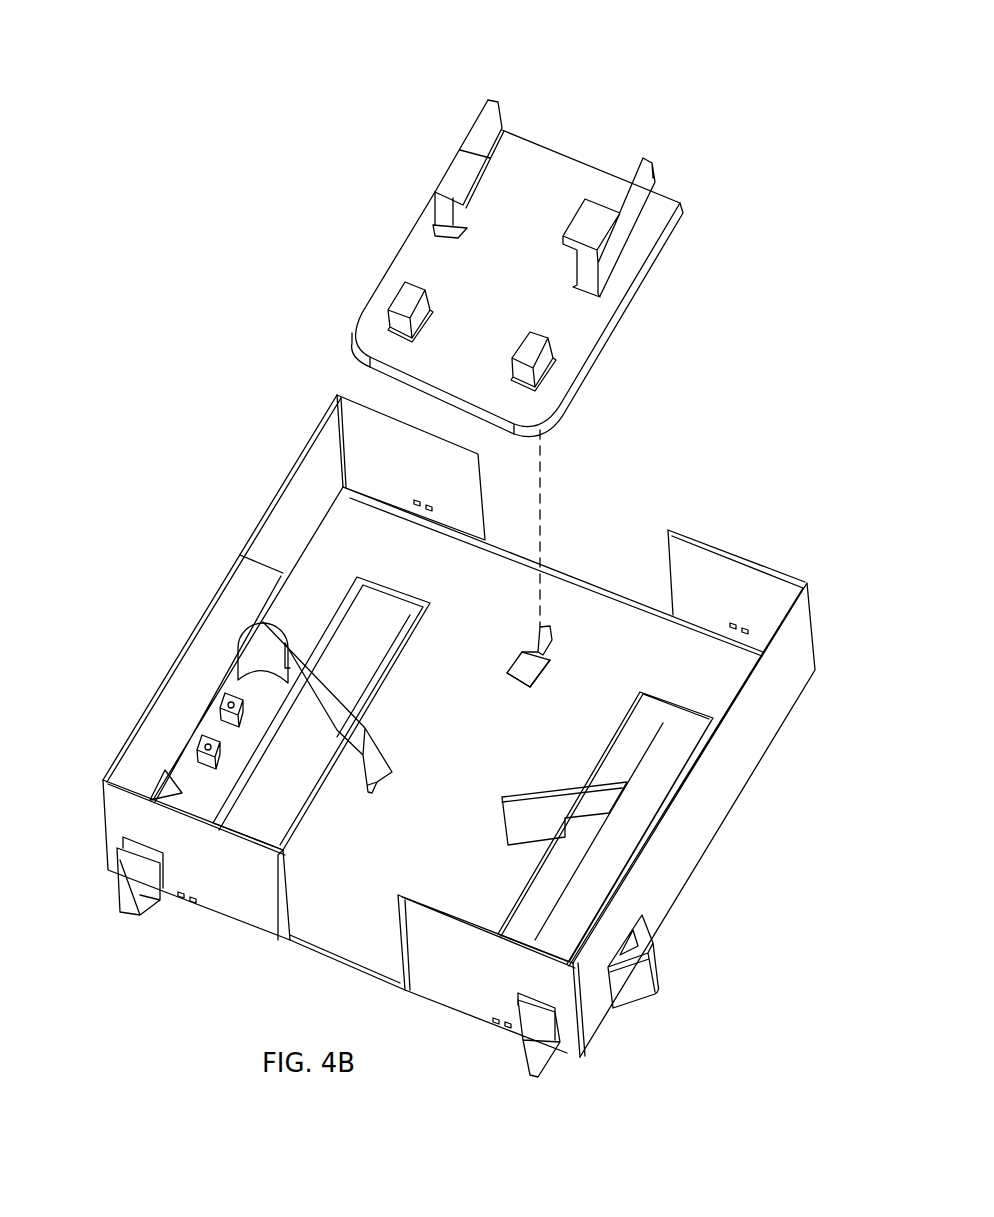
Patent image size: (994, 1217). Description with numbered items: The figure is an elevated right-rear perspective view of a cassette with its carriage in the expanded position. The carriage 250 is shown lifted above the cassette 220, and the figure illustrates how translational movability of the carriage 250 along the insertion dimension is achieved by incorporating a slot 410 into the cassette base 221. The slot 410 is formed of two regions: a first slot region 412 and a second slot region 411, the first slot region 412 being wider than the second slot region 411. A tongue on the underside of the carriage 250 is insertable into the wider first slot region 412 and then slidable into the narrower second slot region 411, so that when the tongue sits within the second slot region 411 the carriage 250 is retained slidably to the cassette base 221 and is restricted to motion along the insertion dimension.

The carriage 250 is at (568, 152).
The tray body 220 is at (182, 308).
The cassette base 221 is at (358, 902).
The slot 410 is at (528, 653).
The second slot region 411 is at (543, 628).
The first slot region 412 is at (522, 667).